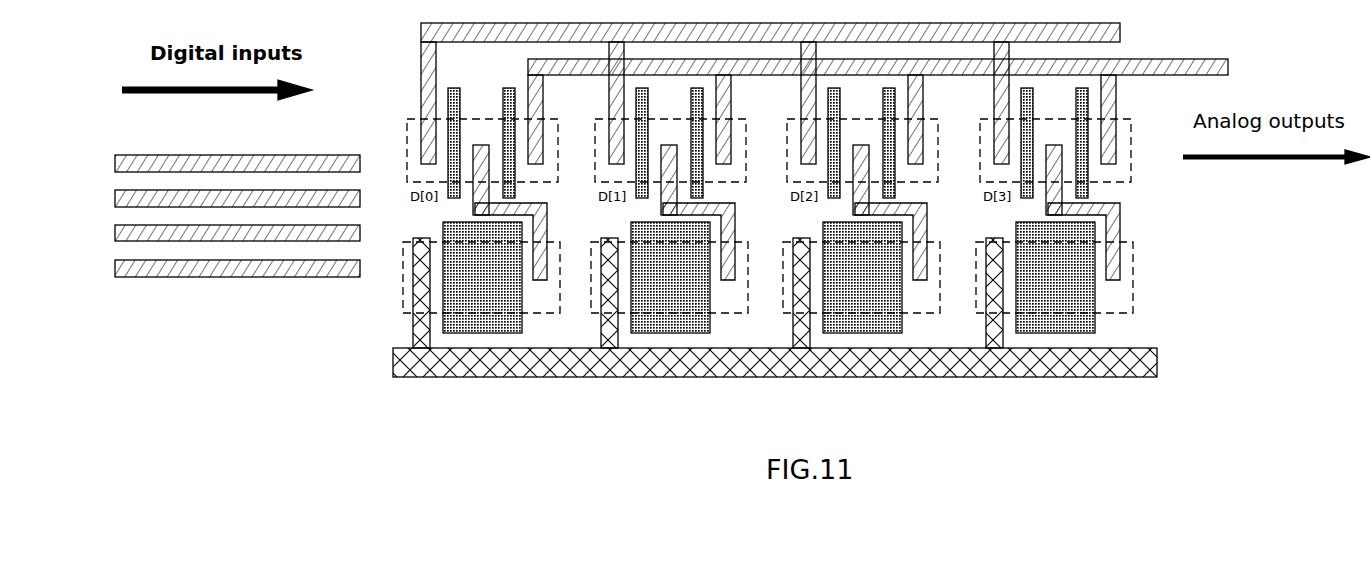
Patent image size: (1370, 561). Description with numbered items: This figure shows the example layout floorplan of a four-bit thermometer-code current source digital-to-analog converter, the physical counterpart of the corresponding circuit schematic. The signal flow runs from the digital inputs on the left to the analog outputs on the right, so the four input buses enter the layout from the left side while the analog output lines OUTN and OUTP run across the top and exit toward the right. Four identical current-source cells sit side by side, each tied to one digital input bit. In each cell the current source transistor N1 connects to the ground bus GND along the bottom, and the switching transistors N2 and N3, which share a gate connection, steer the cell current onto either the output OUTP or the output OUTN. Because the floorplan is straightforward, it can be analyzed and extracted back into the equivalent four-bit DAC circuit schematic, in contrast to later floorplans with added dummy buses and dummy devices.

The NMOS transistor N1 is at (482, 277).
The NMOS transistor N2 is at (475, 134).
The NMOS transistor N3 is at (509, 143).
The analog output OUTN is at (811, 31).
The analog output OUTP is at (913, 65).
The ground line GND is at (745, 362).